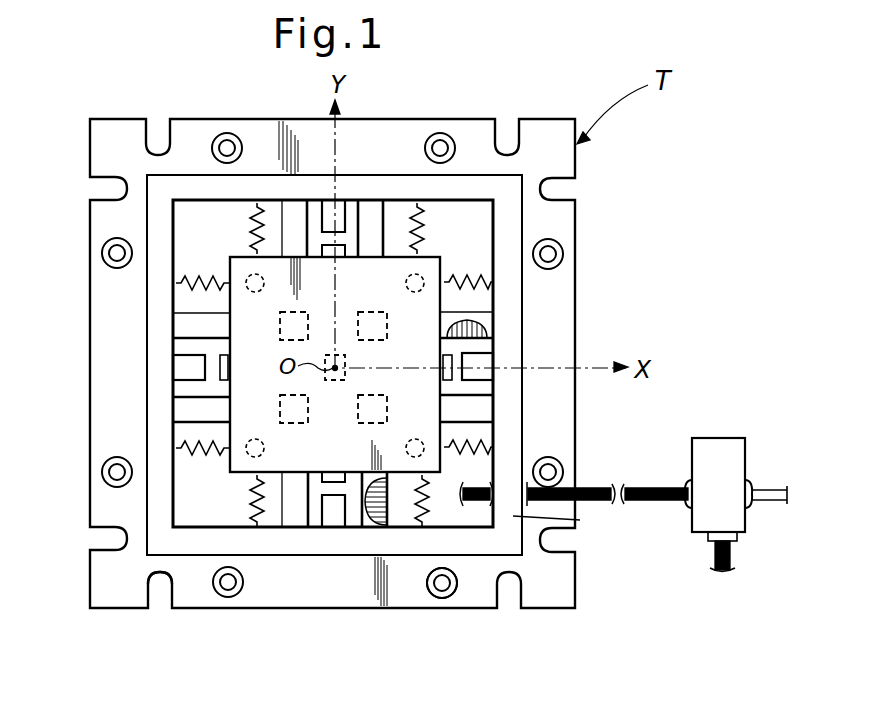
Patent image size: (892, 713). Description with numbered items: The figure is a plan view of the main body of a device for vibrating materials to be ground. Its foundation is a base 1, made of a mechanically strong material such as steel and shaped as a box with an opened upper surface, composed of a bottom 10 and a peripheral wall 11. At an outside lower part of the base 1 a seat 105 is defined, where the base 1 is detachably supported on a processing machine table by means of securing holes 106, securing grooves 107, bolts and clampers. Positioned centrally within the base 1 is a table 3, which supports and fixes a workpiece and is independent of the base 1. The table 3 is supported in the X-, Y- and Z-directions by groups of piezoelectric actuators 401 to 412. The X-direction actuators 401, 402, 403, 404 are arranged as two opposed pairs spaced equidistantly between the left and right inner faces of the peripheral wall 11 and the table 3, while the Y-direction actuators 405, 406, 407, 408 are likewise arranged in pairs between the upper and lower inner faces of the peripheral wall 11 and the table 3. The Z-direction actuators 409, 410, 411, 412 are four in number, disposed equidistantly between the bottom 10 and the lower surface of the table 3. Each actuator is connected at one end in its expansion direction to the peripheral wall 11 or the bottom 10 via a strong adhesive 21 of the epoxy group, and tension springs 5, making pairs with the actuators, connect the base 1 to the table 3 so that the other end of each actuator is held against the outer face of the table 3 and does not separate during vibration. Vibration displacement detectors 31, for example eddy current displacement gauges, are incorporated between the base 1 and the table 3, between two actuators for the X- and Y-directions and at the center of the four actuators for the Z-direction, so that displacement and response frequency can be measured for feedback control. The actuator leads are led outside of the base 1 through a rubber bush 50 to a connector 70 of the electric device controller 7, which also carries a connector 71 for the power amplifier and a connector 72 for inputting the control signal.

The base 1 is at (525, 228).
The table 3 is at (247, 363).
The tension springs 5 is at (250, 276).
The electric device controller 7 is at (716, 455).
The bottom 10 is at (466, 503).
The peripheral wall 11 is at (580, 520).
The strong adhesive 21 is at (178, 302).
The vibration displacement detectors 31 is at (349, 212).
The rubber bush 50 is at (528, 484).
The connector 70 is at (690, 505).
The connector 71 is at (752, 482).
The connector 72 is at (737, 540).
The seat 105 is at (570, 588).
The securing holes 106 is at (442, 594).
The securing grooves 107 is at (158, 597).
The piezoelectric actuator 401 is at (188, 327).
The piezoelectric actuator 402 is at (188, 410).
The piezoelectric actuator 403 is at (487, 322).
The piezoelectric actuator 404 is at (482, 410).
The piezoelectric actuator 405 is at (295, 515).
The piezoelectric actuator 406 is at (372, 520).
The piezoelectric actuator 407 is at (298, 215).
The piezoelectric actuator 408 is at (373, 215).
The piezoelectric actuator 409 is at (280, 334).
The piezoelectric actuator 410 is at (283, 418).
The piezoelectric actuator 411 is at (387, 320).
The piezoelectric actuator 412 is at (387, 418).